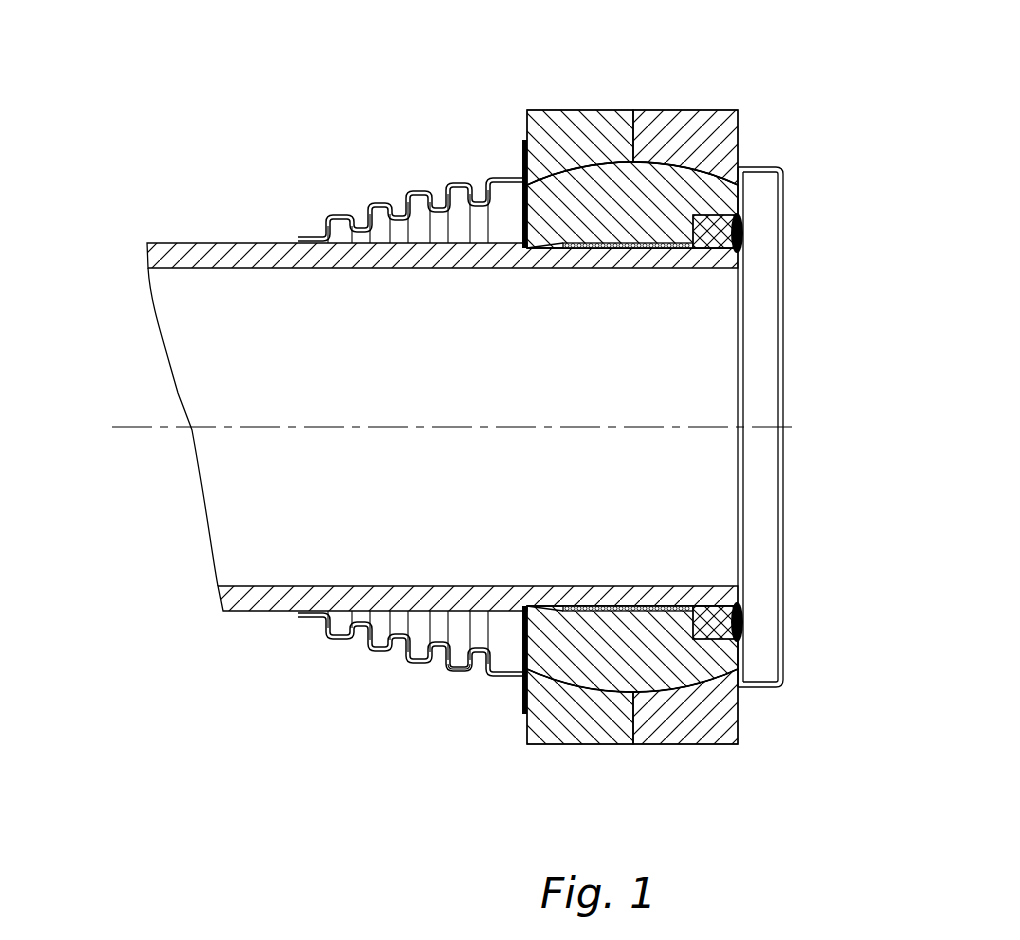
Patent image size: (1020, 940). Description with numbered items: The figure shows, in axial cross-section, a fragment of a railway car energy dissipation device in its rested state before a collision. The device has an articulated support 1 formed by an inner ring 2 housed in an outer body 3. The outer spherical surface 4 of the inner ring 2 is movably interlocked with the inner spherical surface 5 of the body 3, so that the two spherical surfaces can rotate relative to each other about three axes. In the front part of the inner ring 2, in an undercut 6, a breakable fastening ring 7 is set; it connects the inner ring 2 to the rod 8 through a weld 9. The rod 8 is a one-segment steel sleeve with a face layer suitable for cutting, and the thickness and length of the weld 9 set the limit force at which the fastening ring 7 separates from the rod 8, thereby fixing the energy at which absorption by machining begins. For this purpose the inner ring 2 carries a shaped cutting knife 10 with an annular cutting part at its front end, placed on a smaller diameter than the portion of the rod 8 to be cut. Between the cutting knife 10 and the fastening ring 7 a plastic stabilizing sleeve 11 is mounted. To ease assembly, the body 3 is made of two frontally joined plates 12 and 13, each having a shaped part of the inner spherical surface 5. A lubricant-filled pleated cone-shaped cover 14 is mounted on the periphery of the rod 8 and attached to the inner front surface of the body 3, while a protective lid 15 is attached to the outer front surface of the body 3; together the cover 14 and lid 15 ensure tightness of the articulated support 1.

The articulated support 1 is at (495, 162).
The inner ring 2 is at (525, 697).
The outer body 3 is at (642, 98).
The outer spherical surface 4 is at (678, 165).
The inner spherical surface 5 is at (598, 170).
The undercut 6 is at (745, 243).
The breakable ring 7 is at (718, 617).
The rod 8 is at (322, 327).
The weld 9 is at (697, 220).
The cutting knife 10 is at (520, 598).
The plastic stabilizing sleeve 11 is at (628, 605).
The plate 12 is at (597, 722).
The plate 13 is at (688, 698).
The pleated cone-shaped cover 14 is at (447, 667).
The protective lid 15 is at (788, 220).